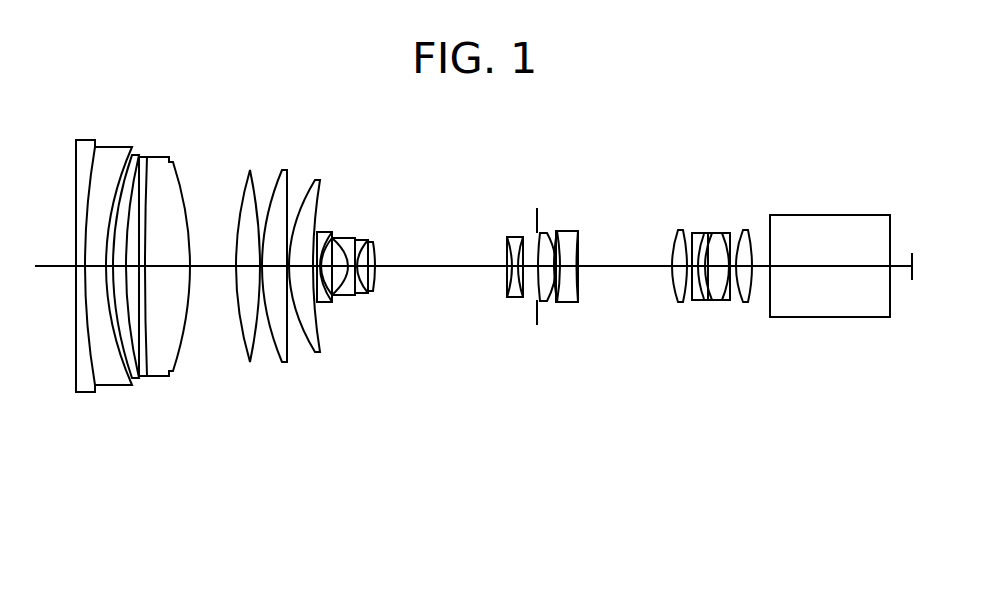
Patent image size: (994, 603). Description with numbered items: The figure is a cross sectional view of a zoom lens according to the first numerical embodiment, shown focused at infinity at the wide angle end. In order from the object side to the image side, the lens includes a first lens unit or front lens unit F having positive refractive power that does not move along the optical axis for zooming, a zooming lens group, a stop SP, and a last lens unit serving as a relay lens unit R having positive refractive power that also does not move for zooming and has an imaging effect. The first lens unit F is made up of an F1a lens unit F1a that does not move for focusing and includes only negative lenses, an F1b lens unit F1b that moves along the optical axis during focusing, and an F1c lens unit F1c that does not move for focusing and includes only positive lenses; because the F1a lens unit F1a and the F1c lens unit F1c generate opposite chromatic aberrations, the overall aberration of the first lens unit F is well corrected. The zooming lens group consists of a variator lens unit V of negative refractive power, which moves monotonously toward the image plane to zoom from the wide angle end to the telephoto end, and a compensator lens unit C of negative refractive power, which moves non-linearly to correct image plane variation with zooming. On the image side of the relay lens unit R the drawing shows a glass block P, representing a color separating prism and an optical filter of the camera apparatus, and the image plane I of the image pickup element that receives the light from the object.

The first lens unit F is at (192, 335).
The F1a lens unit F1a is at (67, 408).
The F1b lens unit F1b is at (124, 390).
The F1c lens unit F1c is at (277, 313).
The variator lens unit V is at (315, 360).
The compensator lens unit C is at (530, 315).
The stop SP is at (534, 360).
The relay lens unit R is at (765, 323).
The glass block P is at (767, 322).
The image plane I is at (909, 313).